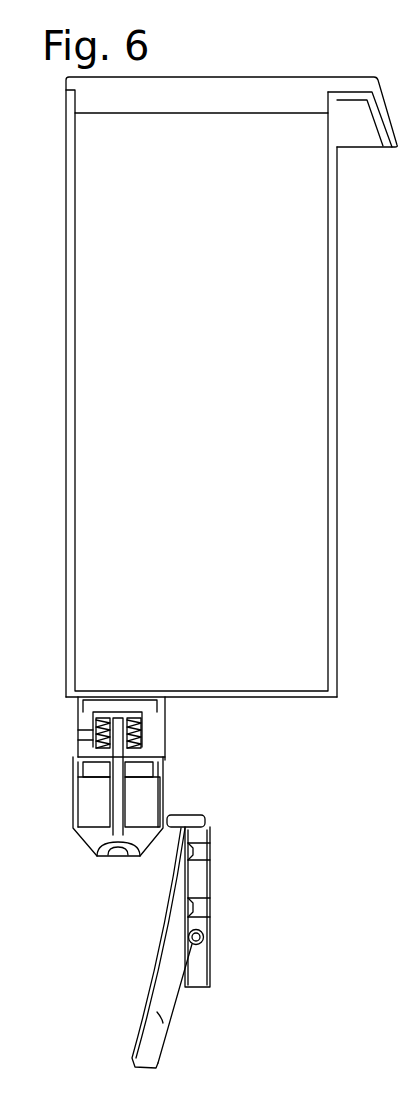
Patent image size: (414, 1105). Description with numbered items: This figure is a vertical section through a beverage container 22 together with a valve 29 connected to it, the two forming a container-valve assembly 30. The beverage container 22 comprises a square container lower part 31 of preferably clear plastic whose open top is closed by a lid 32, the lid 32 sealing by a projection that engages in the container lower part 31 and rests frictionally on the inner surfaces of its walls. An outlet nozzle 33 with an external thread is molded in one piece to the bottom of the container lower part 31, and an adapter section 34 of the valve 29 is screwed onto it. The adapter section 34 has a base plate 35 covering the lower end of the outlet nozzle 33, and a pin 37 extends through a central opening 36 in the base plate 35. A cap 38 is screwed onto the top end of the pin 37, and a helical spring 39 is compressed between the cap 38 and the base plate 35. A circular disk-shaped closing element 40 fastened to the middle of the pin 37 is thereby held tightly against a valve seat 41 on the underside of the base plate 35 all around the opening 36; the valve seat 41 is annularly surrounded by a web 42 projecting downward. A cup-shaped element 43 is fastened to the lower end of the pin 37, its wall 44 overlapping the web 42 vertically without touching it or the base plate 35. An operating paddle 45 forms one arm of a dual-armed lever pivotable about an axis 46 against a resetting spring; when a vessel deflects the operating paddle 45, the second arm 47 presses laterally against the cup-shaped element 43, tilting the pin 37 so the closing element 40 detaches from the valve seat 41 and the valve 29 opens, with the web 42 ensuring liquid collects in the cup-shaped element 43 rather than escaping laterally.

The beverage container 22 is at (354, 50).
The valve 29 is at (139, 912).
The container-valve assembly 30 is at (143, 741).
The container lower part 31 is at (250, 368).
The lid 32 is at (246, 78).
The outlet nozzle 33 is at (78, 717).
The adapter section 34 is at (77, 735).
The base plate 35 is at (78, 757).
The central opening 36 is at (140, 753).
The pin 37 is at (140, 738).
The cap 38 is at (100, 712).
The helical spring 39 is at (143, 712).
The closing element 40 is at (155, 768).
The valve seat 41 is at (80, 762).
The web 42 is at (155, 776).
The cup-shaped element 43 is at (75, 835).
The wall 44 is at (73, 800).
The operating paddle 45 is at (133, 1042).
The axis 46 is at (203, 936).
The second arm 47 is at (180, 820).